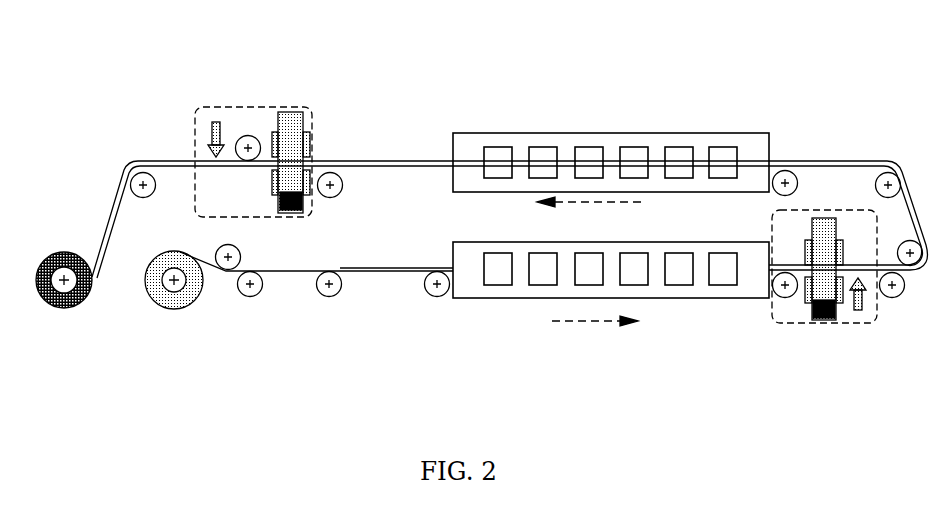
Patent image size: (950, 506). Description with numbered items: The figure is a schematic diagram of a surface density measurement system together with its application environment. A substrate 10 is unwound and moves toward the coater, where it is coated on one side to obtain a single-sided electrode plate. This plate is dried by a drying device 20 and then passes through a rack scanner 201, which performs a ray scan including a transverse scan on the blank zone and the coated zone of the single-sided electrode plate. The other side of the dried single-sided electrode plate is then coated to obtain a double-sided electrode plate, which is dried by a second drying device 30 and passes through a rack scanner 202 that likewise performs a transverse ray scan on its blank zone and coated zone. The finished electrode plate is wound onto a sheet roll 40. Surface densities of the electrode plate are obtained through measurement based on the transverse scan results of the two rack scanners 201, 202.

The substrate 10 is at (193, 303).
The drying device 20 is at (537, 298).
The drying device 30 is at (615, 133).
The sheet roll 40 is at (65, 308).
The rack scanner 201 is at (824, 323).
The rack scanner 202 is at (242, 107).